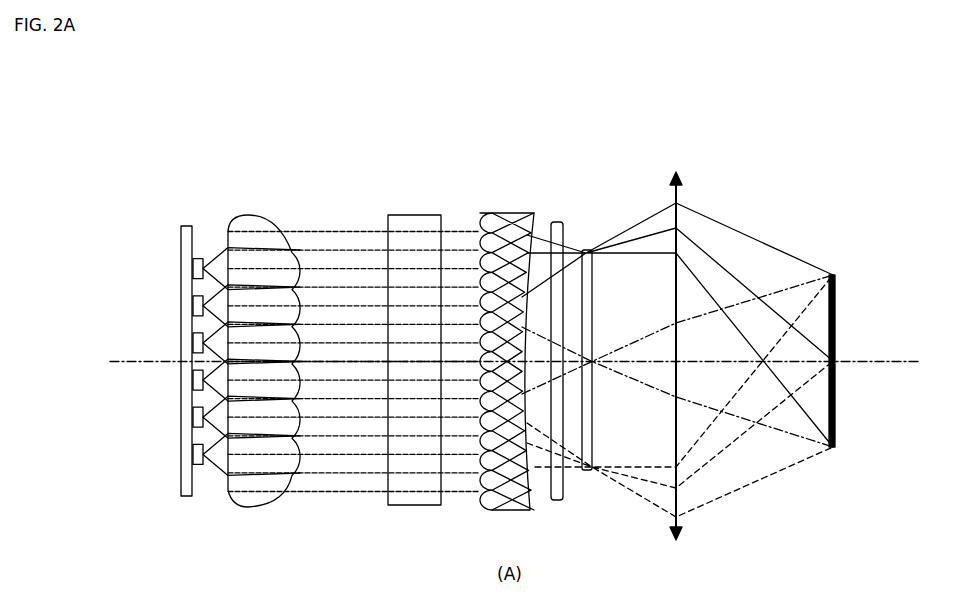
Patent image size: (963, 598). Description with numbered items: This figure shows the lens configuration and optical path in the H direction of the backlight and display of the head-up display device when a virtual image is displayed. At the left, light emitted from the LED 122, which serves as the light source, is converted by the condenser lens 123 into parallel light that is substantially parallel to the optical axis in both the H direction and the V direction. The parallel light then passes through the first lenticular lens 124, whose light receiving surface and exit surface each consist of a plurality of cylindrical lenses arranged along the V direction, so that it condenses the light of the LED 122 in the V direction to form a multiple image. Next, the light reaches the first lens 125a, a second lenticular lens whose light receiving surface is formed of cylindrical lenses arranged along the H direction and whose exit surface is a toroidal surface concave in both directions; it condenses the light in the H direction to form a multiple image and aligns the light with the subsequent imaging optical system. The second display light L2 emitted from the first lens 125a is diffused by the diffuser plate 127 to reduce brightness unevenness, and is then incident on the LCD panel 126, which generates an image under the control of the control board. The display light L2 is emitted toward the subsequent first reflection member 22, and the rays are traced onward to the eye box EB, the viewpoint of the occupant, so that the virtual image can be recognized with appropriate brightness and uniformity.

The LED 122 is at (202, 256).
The condenser lens 123 is at (255, 228).
The first lenticular lens 124 is at (415, 225).
The first lens 125a is at (508, 222).
The diffuser plate 127 is at (557, 221).
The LCD panel 126 is at (585, 249).
The first reflection member 22 is at (680, 192).
The second display light L2 is at (760, 238).
The eye box EB is at (836, 277).